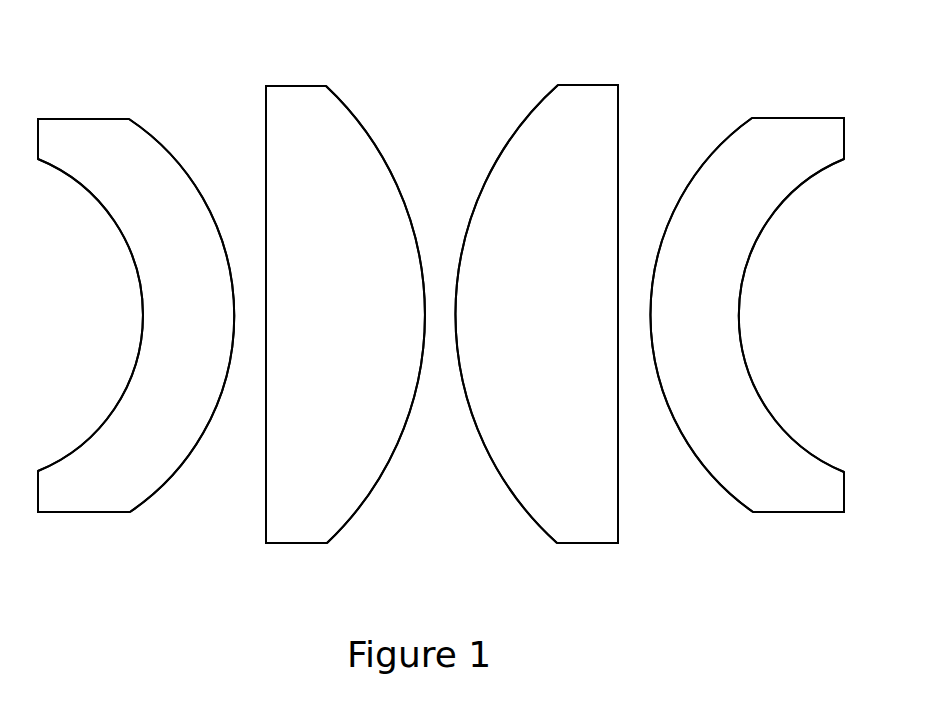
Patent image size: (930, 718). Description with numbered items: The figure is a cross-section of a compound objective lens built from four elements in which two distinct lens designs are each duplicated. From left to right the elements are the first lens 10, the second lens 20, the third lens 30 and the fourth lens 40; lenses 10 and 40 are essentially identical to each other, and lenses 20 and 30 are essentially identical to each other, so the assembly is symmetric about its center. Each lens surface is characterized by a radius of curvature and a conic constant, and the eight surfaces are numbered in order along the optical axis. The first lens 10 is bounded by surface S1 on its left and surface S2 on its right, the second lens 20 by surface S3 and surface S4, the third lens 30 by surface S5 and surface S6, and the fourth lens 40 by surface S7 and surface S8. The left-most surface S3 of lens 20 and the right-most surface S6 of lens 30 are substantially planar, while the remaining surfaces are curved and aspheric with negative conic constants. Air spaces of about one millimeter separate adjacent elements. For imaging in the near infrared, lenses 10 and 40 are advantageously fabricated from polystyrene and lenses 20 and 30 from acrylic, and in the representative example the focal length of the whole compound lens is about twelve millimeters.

The first lens element 10 is at (87, 118).
The second lens element 20 is at (296, 85).
The third lens element 30 is at (583, 83).
The fourth lens element 40 is at (790, 117).
The surface 1 S1 is at (116, 239).
The surface 2 S2 is at (192, 442).
The surface 3 S3 is at (261, 505).
The surface 4 S4 is at (347, 118).
The surface 5 S5 is at (496, 154).
The surface 6 S6 is at (612, 495).
The surface 7 S7 is at (727, 133).
The surface 8 S8 is at (801, 450).